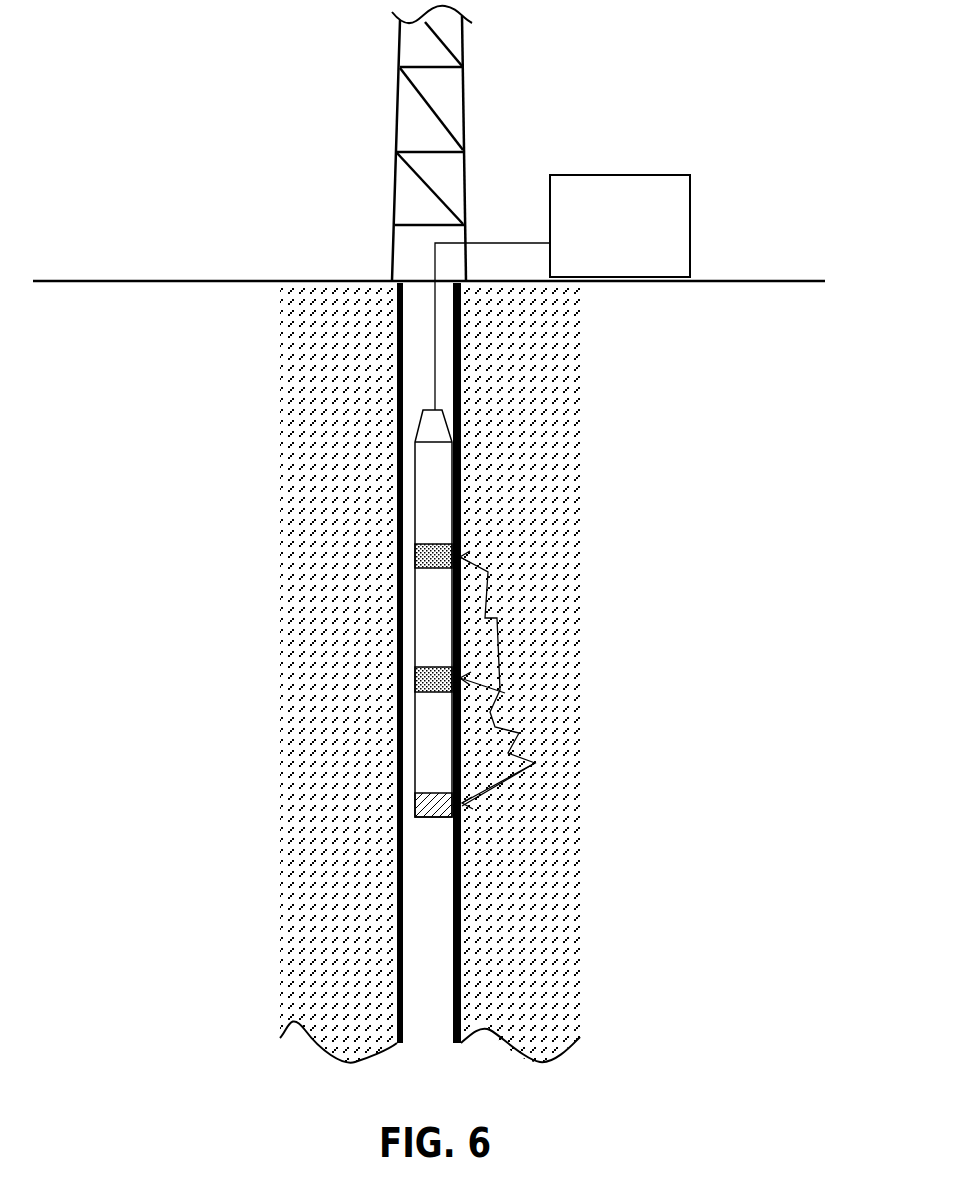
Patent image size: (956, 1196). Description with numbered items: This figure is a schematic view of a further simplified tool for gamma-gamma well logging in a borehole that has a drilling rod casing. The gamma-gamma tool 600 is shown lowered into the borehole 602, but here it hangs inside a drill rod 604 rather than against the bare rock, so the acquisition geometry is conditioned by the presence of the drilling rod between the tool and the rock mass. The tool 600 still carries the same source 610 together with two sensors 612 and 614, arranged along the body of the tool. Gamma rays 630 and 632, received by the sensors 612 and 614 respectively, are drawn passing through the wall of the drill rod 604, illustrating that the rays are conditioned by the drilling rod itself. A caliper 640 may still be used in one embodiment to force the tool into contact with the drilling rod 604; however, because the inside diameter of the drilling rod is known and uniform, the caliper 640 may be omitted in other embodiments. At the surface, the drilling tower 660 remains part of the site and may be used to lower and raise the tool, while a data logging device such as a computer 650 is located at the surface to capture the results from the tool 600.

The gamma-gamma tool 600 is at (462, 497).
The borehole 602 is at (440, 898).
The drill rod 604 is at (460, 853).
The source 610 is at (418, 805).
The sensor 612 is at (417, 683).
The sensor 614 is at (417, 558).
The gamma rays 630 is at (505, 693).
The gamma rays 632 is at (497, 623).
The caliper 640 is at (413, 765).
The computer 650 is at (562, 292).
The drilling tower 660 is at (465, 85).